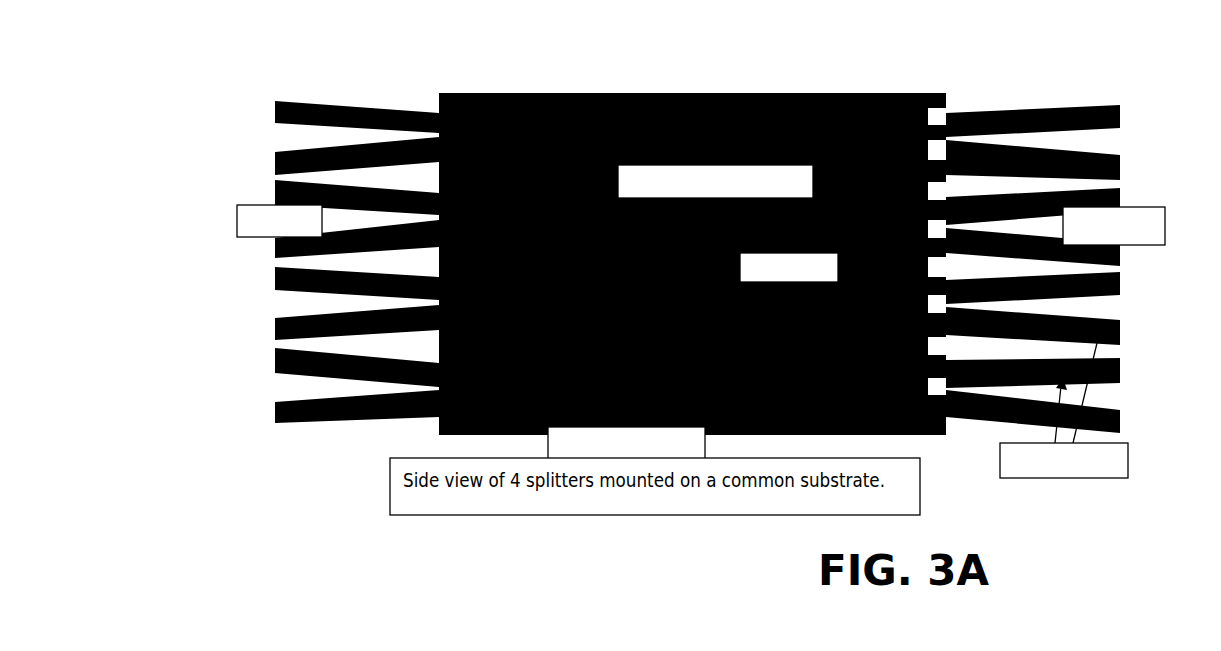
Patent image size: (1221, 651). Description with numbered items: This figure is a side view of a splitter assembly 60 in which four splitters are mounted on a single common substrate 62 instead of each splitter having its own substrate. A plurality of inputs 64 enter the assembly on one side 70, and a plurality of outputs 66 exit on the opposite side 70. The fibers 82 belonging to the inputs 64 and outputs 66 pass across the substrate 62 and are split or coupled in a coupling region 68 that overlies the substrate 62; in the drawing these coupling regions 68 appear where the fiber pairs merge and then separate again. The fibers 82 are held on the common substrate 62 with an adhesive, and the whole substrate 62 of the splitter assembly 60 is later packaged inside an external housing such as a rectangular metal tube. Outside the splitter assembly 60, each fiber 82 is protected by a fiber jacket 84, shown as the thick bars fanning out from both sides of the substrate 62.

The splitter assembly 60 is at (714, 341).
The common substrate 62 is at (693, 91).
The inputs 64 is at (237, 223).
The outputs 66 is at (1165, 217).
The coupling region 68 is at (705, 447).
The side 70 is at (945, 92).
The fibers 82 is at (893, 437).
The fiber jacket 84 is at (1093, 478).